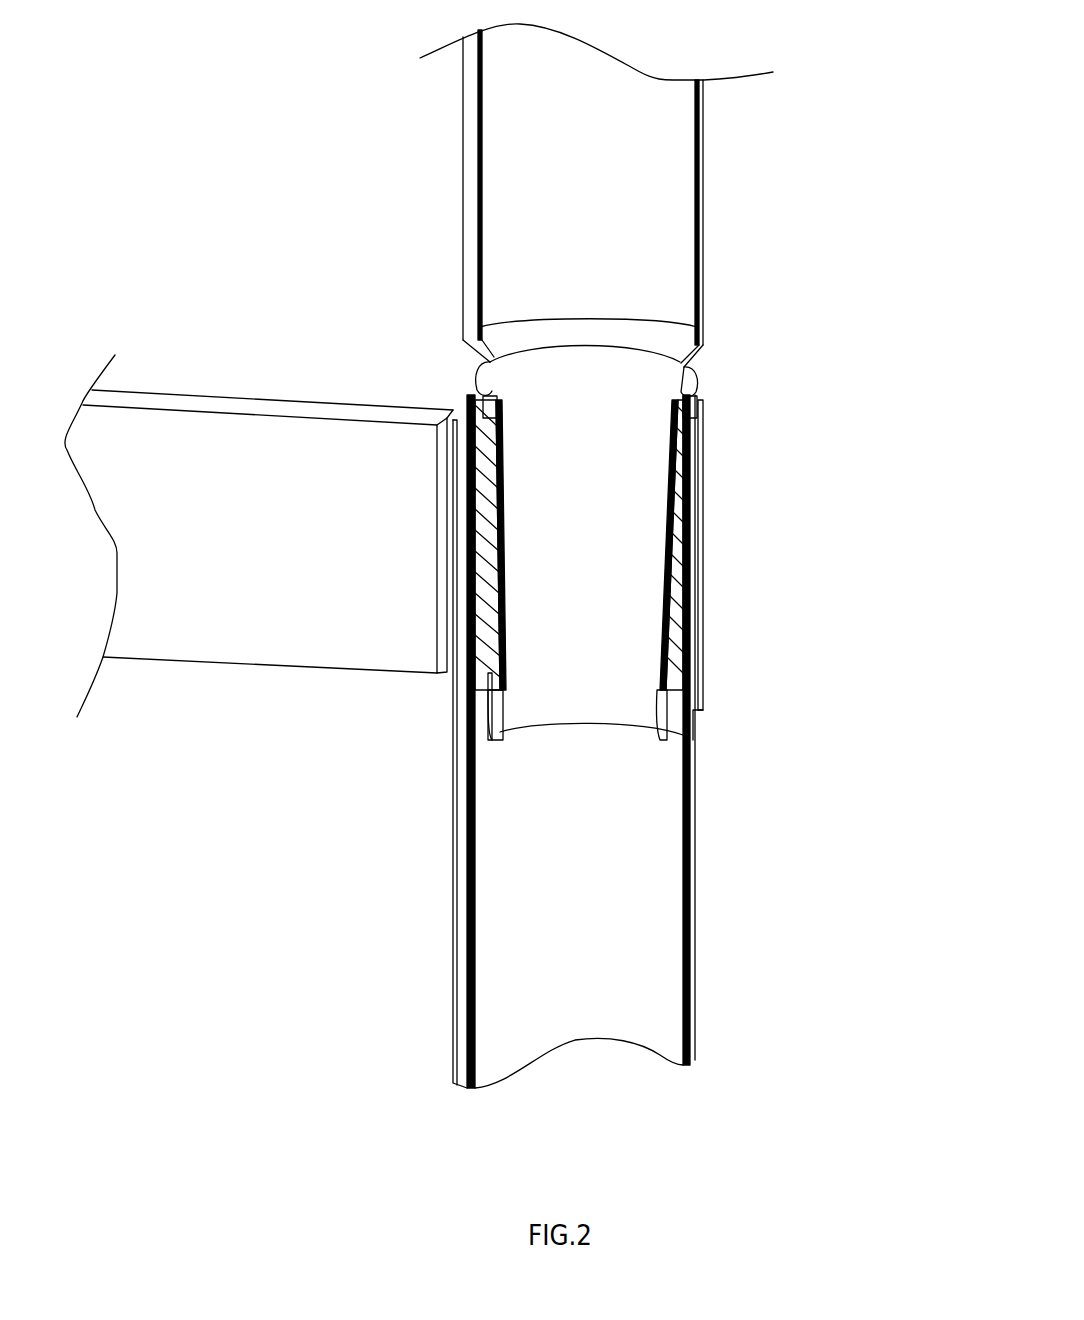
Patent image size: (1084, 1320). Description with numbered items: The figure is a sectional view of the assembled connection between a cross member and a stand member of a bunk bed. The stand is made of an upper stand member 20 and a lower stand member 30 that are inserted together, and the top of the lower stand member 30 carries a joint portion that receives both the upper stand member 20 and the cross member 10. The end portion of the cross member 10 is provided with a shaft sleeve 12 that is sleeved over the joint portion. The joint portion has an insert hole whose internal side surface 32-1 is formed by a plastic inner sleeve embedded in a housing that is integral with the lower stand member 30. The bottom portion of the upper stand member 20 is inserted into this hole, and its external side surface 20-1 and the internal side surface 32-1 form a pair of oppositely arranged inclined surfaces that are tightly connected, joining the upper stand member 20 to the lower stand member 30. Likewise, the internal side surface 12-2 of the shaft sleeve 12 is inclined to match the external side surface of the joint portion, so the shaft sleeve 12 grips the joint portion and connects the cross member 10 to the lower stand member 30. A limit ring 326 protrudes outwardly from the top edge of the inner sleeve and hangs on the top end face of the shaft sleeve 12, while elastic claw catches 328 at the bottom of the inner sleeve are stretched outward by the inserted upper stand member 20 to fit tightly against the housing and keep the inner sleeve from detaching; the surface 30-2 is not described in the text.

The cross member 10 is at (207, 607).
The upper stand member 20 is at (673, 175).
The external side surface of the bottom portion of the upper stand member 20-1 is at (697, 438).
The limit ring 326 is at (695, 377).
The internal side surface of the joint portion 32-1 is at (697, 485).
The shaft sleeve 12 is at (700, 548).
The internal side surface of the shaft sleeve 12-2 is at (700, 582).
The lower pipe lip 30-2 is at (700, 657).
The elastic claw catches 328 is at (457, 760).
The lower stand member 30 is at (662, 985).